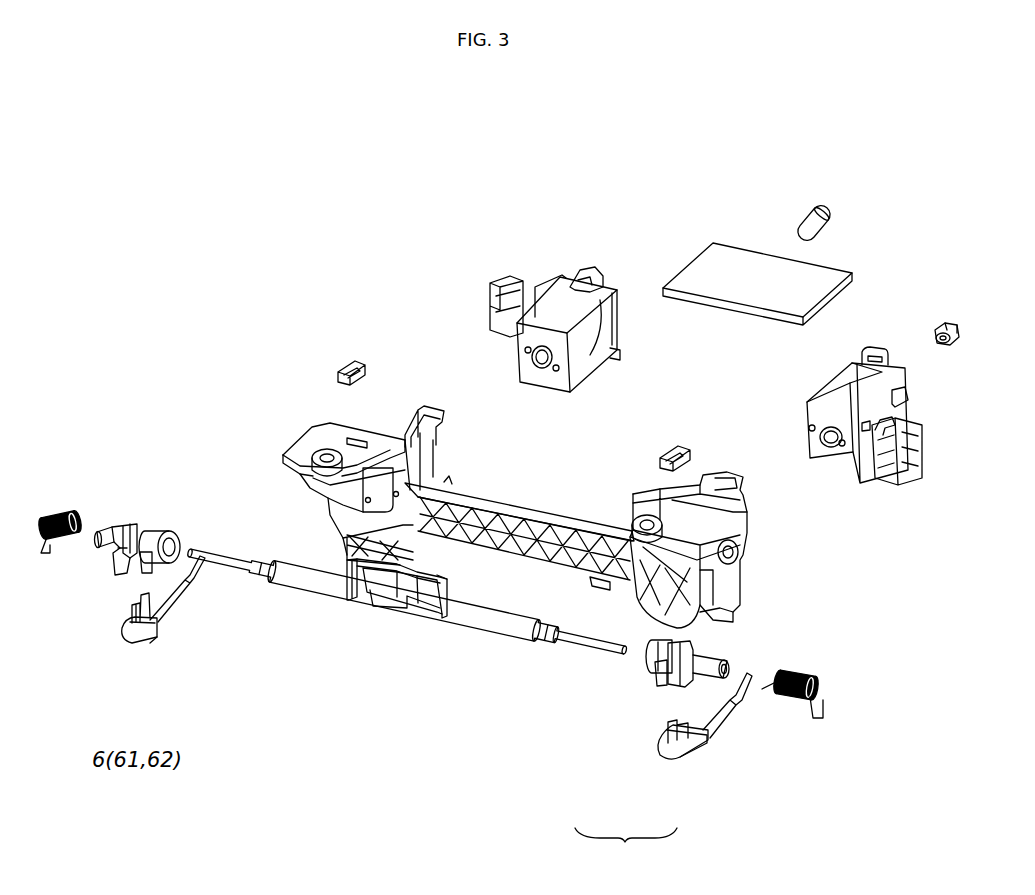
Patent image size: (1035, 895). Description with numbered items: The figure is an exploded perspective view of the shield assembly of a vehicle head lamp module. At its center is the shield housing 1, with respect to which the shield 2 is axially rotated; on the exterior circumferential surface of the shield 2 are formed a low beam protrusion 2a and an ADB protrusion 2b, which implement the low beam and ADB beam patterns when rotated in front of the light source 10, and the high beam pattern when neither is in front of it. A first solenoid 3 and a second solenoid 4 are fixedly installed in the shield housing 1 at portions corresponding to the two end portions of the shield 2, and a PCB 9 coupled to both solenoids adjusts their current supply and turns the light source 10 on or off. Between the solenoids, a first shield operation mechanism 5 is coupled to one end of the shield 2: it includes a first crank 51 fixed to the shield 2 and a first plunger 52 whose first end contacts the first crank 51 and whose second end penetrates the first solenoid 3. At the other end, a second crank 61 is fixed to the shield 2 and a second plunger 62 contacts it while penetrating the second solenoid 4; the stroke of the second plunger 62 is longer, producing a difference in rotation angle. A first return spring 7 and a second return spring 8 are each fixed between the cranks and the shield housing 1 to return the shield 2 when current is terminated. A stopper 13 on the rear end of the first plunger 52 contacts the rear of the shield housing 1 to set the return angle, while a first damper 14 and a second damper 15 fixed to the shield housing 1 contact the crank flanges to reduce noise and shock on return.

The shield housing 1 is at (532, 505).
The shield 2 is at (478, 622).
The low beam protrusion 2a is at (372, 592).
The ADB protrusion 2b is at (387, 605).
The first solenoid 3 is at (905, 413).
The second solenoid 4 is at (567, 290).
The first shield operation mechanism 5 is at (626, 850).
The first crank 51 is at (655, 675).
The first plunger 52 is at (672, 757).
The second crank 61 is at (127, 567).
The second plunger 62 is at (152, 633).
The first return spring 7 is at (800, 673).
The second return spring 8 is at (55, 512).
The PCB 9 is at (730, 257).
The light source 10 is at (838, 216).
The stopper 13 is at (958, 325).
The first damper 14 is at (688, 450).
The second damper 15 is at (340, 365).